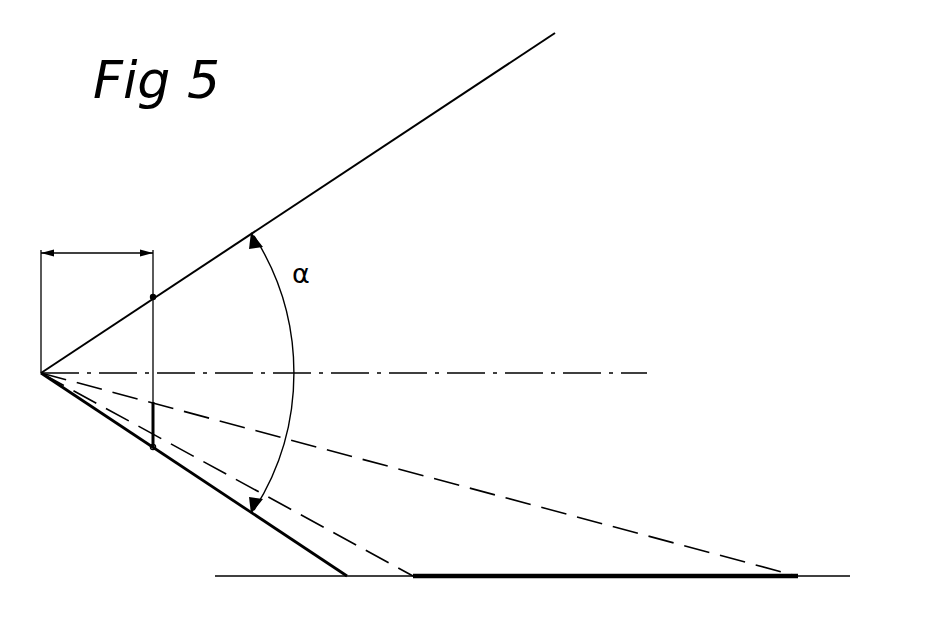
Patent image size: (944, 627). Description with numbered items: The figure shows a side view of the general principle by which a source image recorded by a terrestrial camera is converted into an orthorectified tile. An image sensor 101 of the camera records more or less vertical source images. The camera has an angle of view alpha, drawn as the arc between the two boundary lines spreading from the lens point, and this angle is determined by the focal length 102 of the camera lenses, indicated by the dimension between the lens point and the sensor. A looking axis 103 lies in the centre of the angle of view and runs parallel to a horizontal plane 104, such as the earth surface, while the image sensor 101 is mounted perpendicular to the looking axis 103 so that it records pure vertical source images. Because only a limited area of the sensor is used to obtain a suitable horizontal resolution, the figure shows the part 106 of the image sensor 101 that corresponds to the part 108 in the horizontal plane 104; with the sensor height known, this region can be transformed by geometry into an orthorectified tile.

The image sensor 101 is at (153, 340).
The focal length 102 is at (97, 301).
The looking axis 103 is at (590, 372).
The horizontal plane 104 is at (228, 575).
The part of the image sensor 106 is at (153, 418).
The part in the horizontal plane 108 is at (572, 578).